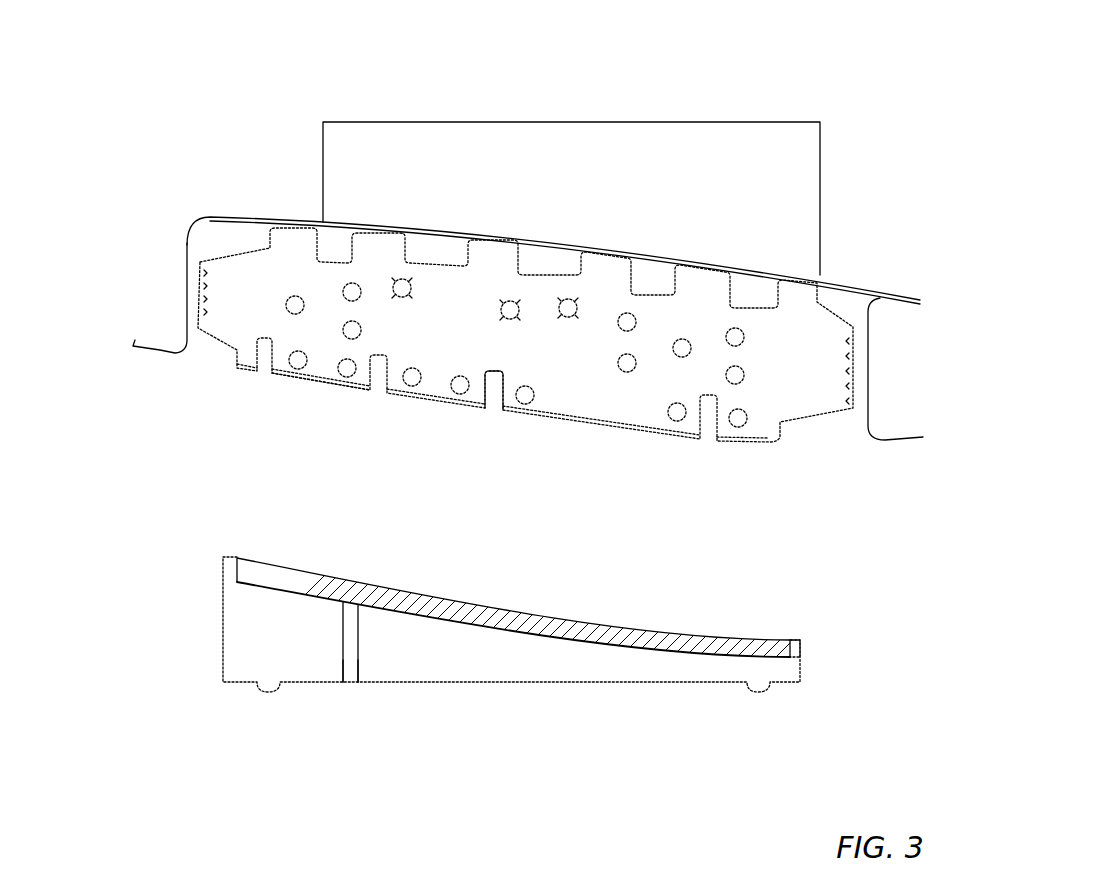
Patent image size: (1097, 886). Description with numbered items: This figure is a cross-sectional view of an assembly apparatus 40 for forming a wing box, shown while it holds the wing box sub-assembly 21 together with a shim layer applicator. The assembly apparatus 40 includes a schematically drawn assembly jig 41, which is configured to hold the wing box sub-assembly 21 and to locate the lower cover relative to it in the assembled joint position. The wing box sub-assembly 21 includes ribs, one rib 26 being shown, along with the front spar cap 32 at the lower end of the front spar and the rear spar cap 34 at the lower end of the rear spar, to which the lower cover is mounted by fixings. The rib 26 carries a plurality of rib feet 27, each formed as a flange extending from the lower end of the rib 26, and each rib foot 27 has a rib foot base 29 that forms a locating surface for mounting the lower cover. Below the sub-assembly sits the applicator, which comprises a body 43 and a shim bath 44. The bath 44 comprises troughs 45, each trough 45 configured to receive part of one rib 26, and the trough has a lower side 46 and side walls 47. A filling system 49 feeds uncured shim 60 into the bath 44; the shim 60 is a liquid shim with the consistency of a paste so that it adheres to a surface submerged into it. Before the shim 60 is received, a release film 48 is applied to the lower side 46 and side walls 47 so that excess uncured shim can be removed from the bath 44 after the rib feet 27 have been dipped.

The wing box sub-assembly 21 is at (890, 210).
The rib 26 is at (683, 390).
The rib foot 27 is at (293, 380).
The rib foot base 29 is at (515, 420).
The front spar cap 32 is at (138, 345).
The rear spar cap 34 is at (913, 438).
The assembly apparatus 40 is at (868, 84).
The assembly jig 41 is at (648, 150).
The body 43 is at (448, 665).
The shim bath 44 is at (733, 648).
The trough 45 is at (497, 625).
The lower side 46 is at (653, 653).
The side wall 47 is at (798, 648).
The release film 48 is at (327, 600).
The filling system 49 is at (347, 670).
The shim material 60 is at (565, 627).